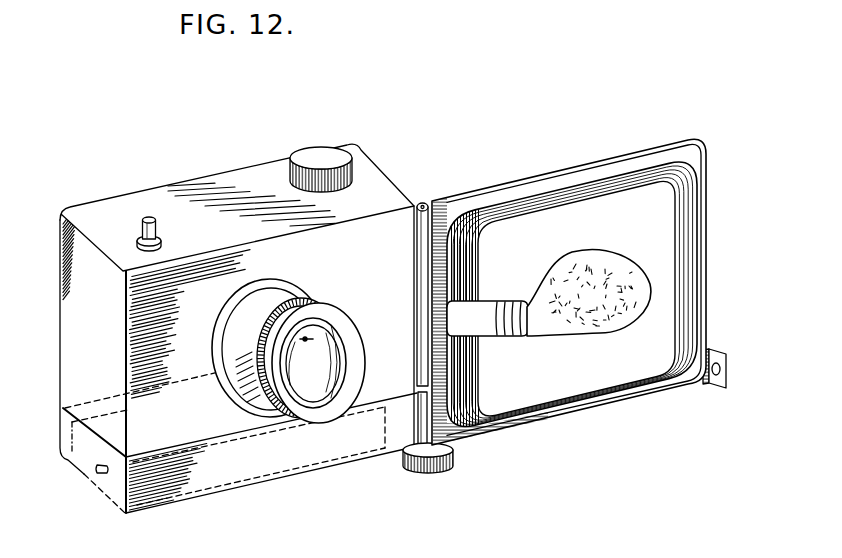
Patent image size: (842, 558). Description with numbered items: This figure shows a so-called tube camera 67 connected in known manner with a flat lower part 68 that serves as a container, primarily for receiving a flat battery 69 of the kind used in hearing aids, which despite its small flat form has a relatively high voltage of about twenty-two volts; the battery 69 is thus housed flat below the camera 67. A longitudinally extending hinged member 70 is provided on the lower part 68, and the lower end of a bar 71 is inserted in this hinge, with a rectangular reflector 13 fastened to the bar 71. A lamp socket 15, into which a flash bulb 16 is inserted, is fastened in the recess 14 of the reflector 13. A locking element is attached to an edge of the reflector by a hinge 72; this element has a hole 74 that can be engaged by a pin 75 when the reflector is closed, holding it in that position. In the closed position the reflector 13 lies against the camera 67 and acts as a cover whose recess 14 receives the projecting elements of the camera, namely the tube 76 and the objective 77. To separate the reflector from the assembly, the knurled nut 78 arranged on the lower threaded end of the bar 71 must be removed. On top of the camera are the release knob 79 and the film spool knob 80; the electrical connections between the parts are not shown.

The rectangular reflector 13 is at (497, 190).
The recess 14 is at (580, 205).
The lamp socket 15 is at (481, 340).
The flash bulb 16 is at (574, 331).
The tube camera 67 is at (378, 186).
The flat lower part 68 is at (66, 421).
The flat battery 69 is at (70, 450).
The hinged member 70 is at (422, 432).
The bar 71 is at (430, 203).
The hinge 72 is at (709, 350).
The hole 74 is at (714, 375).
The pin 75 is at (104, 470).
The tube 76 is at (250, 323).
The objective 77 is at (357, 353).
The knurled nut 78 is at (432, 473).
The release knob 79 is at (157, 233).
The film spool knob 80 is at (319, 158).